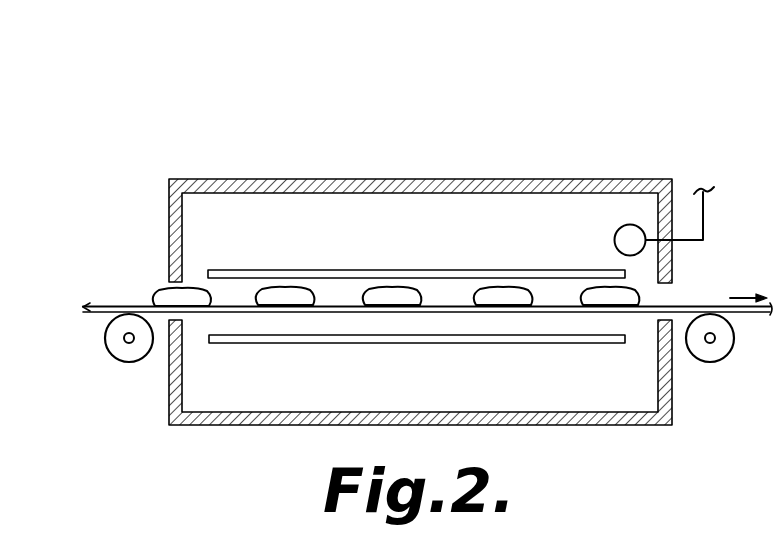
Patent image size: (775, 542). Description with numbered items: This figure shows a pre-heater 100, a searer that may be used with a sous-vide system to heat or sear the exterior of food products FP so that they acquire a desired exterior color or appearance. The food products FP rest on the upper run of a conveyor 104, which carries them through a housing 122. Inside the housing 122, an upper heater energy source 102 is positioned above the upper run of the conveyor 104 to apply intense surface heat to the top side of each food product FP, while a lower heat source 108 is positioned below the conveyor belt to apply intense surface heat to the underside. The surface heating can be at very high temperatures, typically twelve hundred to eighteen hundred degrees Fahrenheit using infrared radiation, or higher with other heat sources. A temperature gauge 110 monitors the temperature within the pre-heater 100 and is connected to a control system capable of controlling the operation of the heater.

The pre-heater 100 is at (437, 148).
The housing 122 is at (208, 179).
The upper heater energy source 102 is at (277, 270).
The lower heat source 108 is at (281, 344).
The temperature gauge 110 is at (619, 229).
The conveyor 104 is at (700, 306).
The food products FP is at (156, 292).